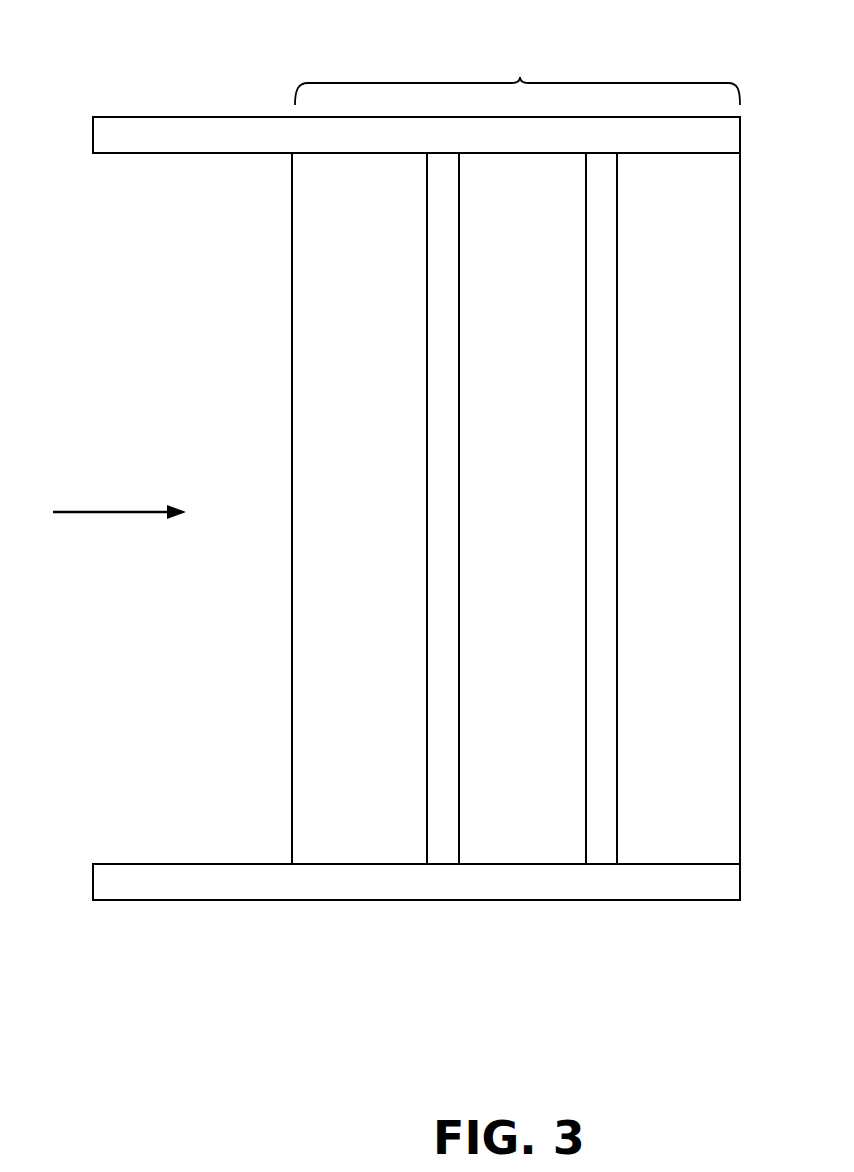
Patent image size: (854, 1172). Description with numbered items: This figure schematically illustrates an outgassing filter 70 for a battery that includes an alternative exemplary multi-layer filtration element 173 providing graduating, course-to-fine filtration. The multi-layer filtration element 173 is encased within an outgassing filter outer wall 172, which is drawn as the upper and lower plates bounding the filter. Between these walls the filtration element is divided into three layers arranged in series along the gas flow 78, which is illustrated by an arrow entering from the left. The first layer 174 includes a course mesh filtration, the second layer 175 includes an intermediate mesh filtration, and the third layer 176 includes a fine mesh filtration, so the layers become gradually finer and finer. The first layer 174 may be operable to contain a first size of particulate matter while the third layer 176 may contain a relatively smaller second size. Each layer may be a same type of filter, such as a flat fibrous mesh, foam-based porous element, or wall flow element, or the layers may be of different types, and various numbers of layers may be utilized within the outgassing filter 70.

The outgassing filter 70 is at (564, 900).
The gas flow 78 is at (114, 512).
The outgassing filter outer wall 172 is at (133, 130).
The multi-layer filtration element 173 is at (517, 79).
The first layer 174 is at (358, 832).
The second layer 175 is at (493, 832).
The third layer 176 is at (688, 832).